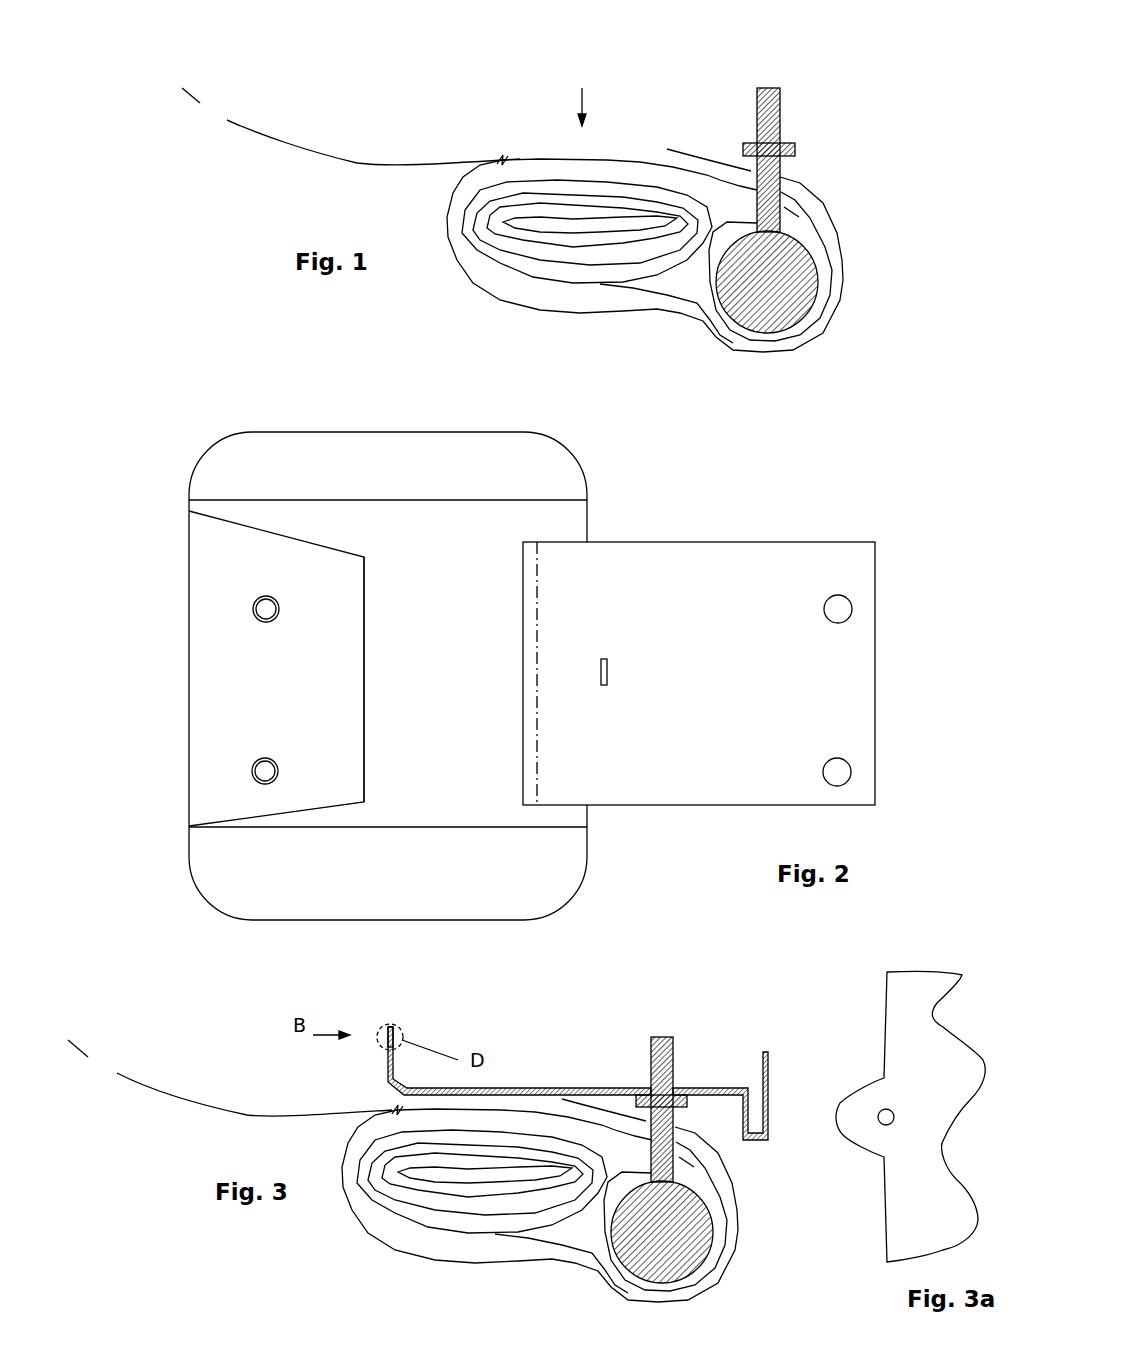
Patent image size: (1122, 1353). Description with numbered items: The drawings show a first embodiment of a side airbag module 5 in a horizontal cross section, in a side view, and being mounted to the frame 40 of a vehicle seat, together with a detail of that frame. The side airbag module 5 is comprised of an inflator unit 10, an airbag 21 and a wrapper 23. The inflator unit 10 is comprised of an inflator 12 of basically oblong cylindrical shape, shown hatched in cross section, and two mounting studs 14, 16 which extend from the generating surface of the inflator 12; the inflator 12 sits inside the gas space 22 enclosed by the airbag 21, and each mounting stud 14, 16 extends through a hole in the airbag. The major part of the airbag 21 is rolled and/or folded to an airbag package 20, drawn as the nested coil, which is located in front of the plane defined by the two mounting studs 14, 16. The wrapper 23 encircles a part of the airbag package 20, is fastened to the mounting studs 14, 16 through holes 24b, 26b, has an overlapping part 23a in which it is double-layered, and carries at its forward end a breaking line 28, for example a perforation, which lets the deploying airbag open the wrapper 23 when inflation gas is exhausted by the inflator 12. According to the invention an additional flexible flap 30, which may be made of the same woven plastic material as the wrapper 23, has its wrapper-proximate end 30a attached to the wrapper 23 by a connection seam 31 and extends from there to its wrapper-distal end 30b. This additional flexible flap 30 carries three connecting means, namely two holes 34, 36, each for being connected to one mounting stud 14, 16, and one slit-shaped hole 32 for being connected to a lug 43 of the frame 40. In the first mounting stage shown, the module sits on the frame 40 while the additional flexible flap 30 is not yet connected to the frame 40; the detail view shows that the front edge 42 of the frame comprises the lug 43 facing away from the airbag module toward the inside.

In FIG. 1, the side airbag module 5 is at (842, 78).
In FIG. 1, the inflator unit 10 is at (778, 233).
In FIG. 1, the inflator 12 is at (782, 280).
In FIG. 1, the mounting stud 14 is at (780, 173).
In FIG. 2, the mounting stud 14 is at (255, 609).
In FIG. 3, the mounting stud 14 is at (673, 1057).
In FIG. 2, the mounting stud 16 is at (252, 773).
In FIG. 1, the airbag package 20 is at (583, 287).
In FIG. 2, the airbag package 20 is at (244, 463).
In FIG. 1, the airbag 21 is at (735, 330).
In FIG. 1, the gas space 22 is at (590, 215).
In FIG. 1, the wrapper 23 is at (498, 298).
In FIG. 2, the wrapper 23 is at (465, 545).
In FIG. 1, the overlapping part 23a is at (715, 157).
In FIG. 2, the overlapping part 23a is at (254, 677).
In FIG. 2, the hole 24b is at (255, 603).
In FIG. 2, the hole 26b is at (254, 776).
In FIG. 1, the breaking line 28 is at (441, 212).
In FIG. 1, the additional flexible flap 30 is at (285, 143).
In FIG. 2, the additional flexible flap 30 is at (670, 775).
In FIG. 1, the wrapper-proximate end 30a is at (508, 158).
In FIG. 1, the wrapper-distal end 30b is at (183, 88).
In FIG. 1, the connection seam 31 is at (501, 158).
In FIG. 2, the connection seam 31 is at (535, 764).
In FIG. 2, the slit-shaped hole 32 is at (608, 673).
In FIG. 1, the hole 34 is at (212, 107).
In FIG. 2, the hole 34 is at (840, 608).
In FIG. 2, the hole 36 is at (840, 775).
In FIG. 3, the frame 40 is at (630, 1090).
In FIG. 3, the front edge 42 is at (393, 1020).
In FIG. 3, the lug 43 is at (400, 1035).
In FIG. 3A, the lug 43 is at (857, 1112).